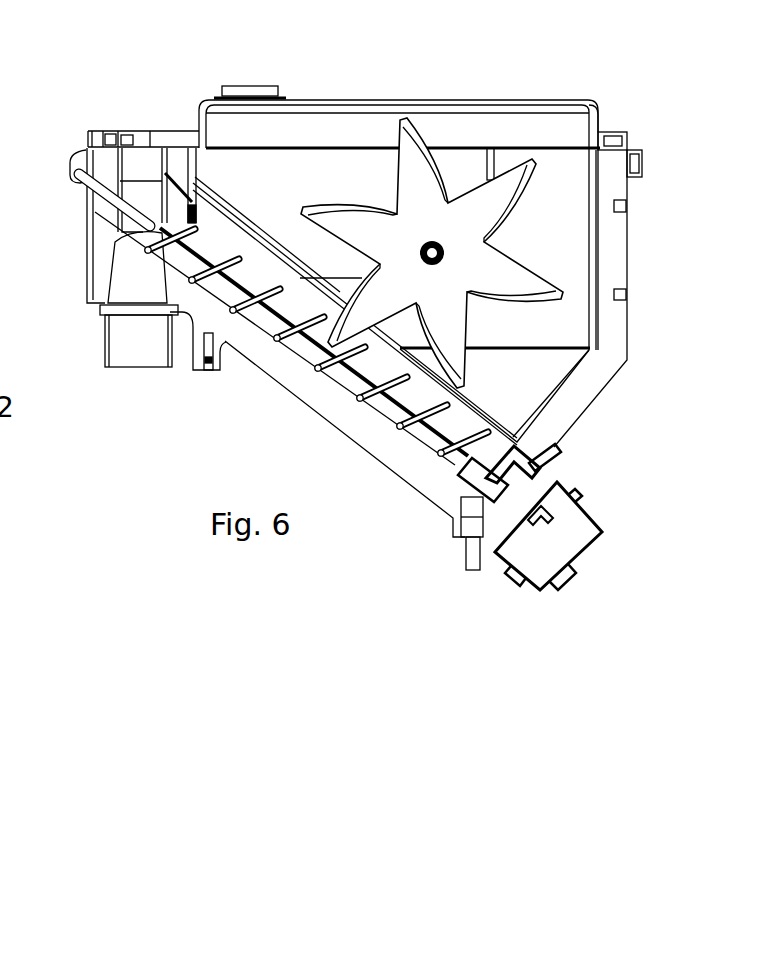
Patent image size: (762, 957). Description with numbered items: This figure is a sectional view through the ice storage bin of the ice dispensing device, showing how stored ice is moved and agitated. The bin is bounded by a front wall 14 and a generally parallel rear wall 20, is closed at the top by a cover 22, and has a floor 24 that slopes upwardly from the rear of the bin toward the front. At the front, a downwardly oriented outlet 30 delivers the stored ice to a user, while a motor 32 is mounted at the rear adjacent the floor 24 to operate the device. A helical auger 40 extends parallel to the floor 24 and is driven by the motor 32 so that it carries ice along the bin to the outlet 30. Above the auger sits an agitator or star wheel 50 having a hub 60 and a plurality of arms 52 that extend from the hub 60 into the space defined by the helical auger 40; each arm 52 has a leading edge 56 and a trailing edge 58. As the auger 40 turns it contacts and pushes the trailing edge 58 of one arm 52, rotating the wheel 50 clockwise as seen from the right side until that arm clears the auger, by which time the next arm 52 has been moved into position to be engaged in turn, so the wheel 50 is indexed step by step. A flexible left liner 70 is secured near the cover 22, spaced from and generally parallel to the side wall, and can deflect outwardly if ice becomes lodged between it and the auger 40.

The front wall 14 is at (87, 263).
The rear wall 20 is at (610, 295).
The cover 22 is at (430, 110).
The floor 24 is at (310, 408).
The outlet 30 is at (142, 355).
The motor 32 is at (567, 538).
The helical auger 40 is at (378, 390).
The agitator wheel 50 is at (444, 243).
The arms 52 is at (417, 180).
The leading edge 56 is at (532, 300).
The trailing edge 58 is at (533, 278).
The hub 60 is at (533, 162).
The left liner 70 is at (287, 190).